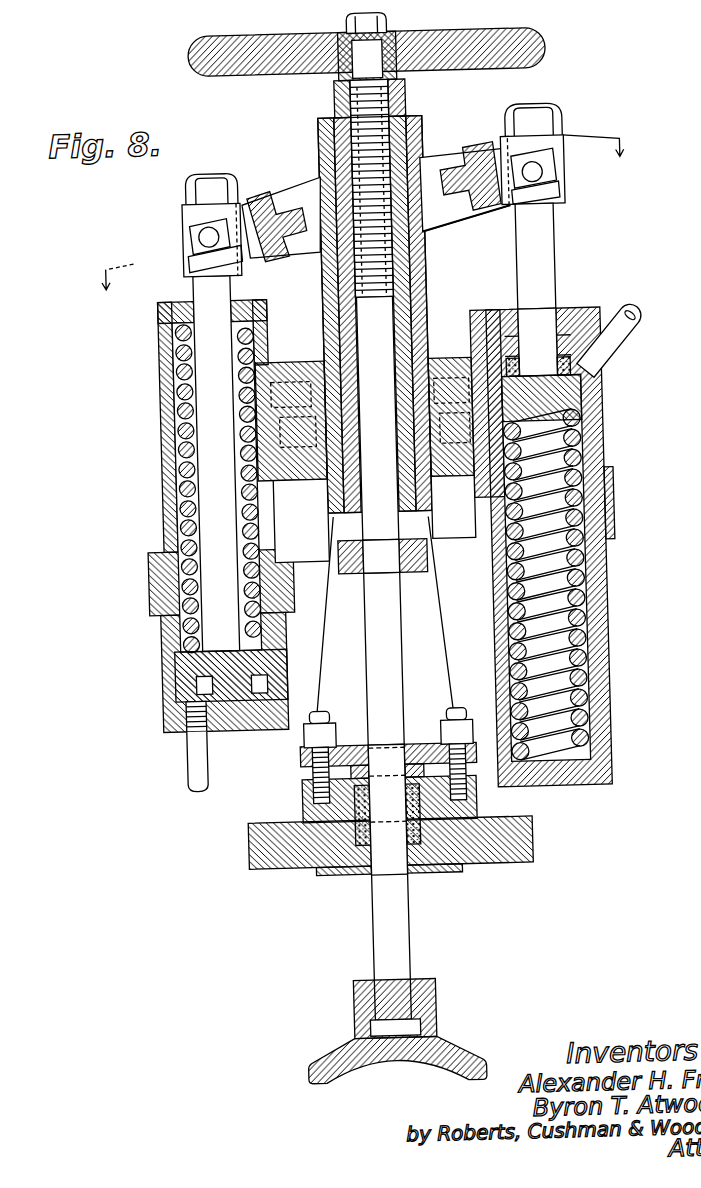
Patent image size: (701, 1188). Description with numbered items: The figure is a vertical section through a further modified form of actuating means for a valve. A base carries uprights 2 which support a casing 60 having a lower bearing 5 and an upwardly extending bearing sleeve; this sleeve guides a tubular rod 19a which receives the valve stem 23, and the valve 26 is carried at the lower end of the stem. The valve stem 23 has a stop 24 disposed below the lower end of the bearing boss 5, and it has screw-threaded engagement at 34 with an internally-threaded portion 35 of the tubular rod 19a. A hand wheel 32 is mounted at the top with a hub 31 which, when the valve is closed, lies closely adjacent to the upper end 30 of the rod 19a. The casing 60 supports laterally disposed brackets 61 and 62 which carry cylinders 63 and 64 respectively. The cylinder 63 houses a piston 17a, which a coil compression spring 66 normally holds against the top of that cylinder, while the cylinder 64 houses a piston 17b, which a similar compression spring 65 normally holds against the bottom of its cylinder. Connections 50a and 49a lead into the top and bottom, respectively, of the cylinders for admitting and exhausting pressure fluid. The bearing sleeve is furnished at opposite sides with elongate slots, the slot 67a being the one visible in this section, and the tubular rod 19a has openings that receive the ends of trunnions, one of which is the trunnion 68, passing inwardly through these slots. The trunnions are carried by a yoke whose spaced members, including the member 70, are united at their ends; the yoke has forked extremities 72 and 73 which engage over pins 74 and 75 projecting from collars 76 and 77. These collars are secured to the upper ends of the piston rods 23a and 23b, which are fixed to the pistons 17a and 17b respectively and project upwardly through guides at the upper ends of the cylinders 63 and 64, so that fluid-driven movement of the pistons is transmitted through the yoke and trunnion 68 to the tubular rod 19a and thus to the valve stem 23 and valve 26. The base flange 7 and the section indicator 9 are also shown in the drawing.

The uprights 2 is at (430, 672).
The lower bearing 5 is at (418, 493).
The base flange 7 is at (514, 843).
The section line 9- 9 is at (357, 217).
The piston 17a is at (575, 414).
The piston 17b is at (180, 667).
The tubular rod 19a is at (406, 326).
The valve stem 23 is at (370, 689).
The piston rod 23a is at (546, 255).
The piston rod 23b is at (205, 458).
The stop 24 is at (415, 557).
The valve 26 is at (424, 1062).
The upper end of the sleeve 30 is at (338, 83).
The hub 31 is at (344, 72).
The hand wheel 32 is at (203, 72).
The screw-threaded engagement 34 is at (403, 106).
The internally-threaded portion 35 is at (332, 149).
The connection 49a is at (170, 757).
The connection 50a is at (628, 334).
The casing 60 is at (315, 305).
The bracket 61 is at (313, 367).
The bracket 62 is at (465, 355).
The cylinder 63 is at (594, 446).
The cylinder 64 is at (147, 326).
The compression spring 65 is at (170, 410).
The coil compression spring 66 is at (572, 560).
The arm 67a is at (322, 268).
The trunnion 68 is at (422, 235).
The yoke member 70 is at (441, 158).
The forked extremity 72 is at (556, 146).
The forked extremity 73 is at (186, 217).
The pin 74 is at (539, 176).
The pin 75 is at (196, 234).
The collar 76 is at (556, 205).
The collar 77 is at (186, 258).